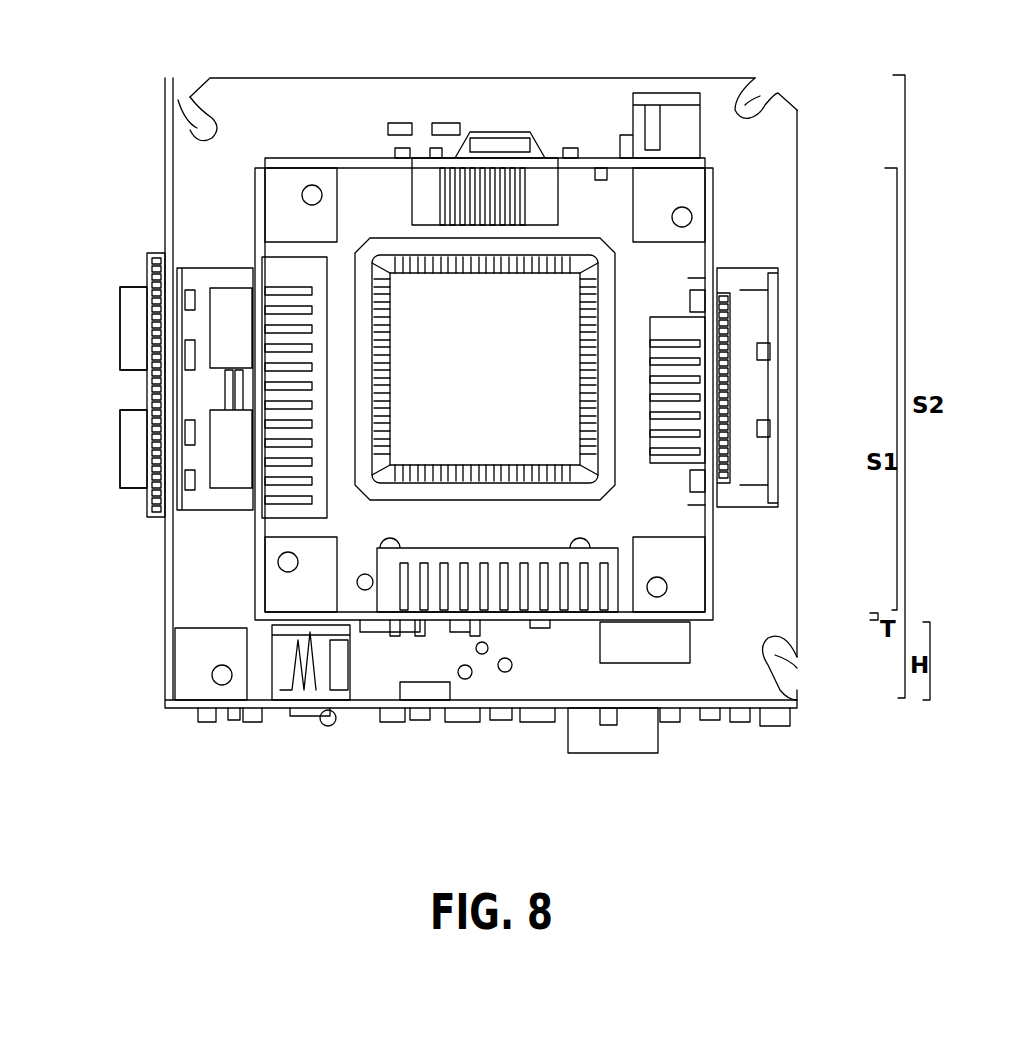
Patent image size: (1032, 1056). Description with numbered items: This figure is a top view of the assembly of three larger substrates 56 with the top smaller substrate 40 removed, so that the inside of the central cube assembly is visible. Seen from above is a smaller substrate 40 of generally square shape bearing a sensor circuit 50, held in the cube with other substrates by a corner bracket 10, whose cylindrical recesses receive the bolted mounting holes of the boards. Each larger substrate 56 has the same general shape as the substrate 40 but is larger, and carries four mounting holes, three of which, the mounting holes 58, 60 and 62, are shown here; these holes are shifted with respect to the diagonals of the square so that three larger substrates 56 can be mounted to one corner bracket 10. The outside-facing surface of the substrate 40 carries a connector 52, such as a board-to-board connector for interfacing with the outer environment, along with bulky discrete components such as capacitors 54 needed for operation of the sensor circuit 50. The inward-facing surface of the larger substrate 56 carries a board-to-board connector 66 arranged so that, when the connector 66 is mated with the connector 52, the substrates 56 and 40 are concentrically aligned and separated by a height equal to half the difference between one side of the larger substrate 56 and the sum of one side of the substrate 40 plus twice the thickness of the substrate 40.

The corner bracket 10 is at (293, 180).
The substrate 40 is at (355, 160).
The sensor circuit 50 is at (402, 247).
The connector 52 is at (745, 410).
The capacitor 54 is at (655, 650).
The larger substrate 56 is at (585, 103).
The mounting hole 58 is at (195, 125).
The mounting hole 60 is at (745, 97).
The mounting hole 62 is at (797, 662).
The board-to-board connector 66 is at (343, 677).